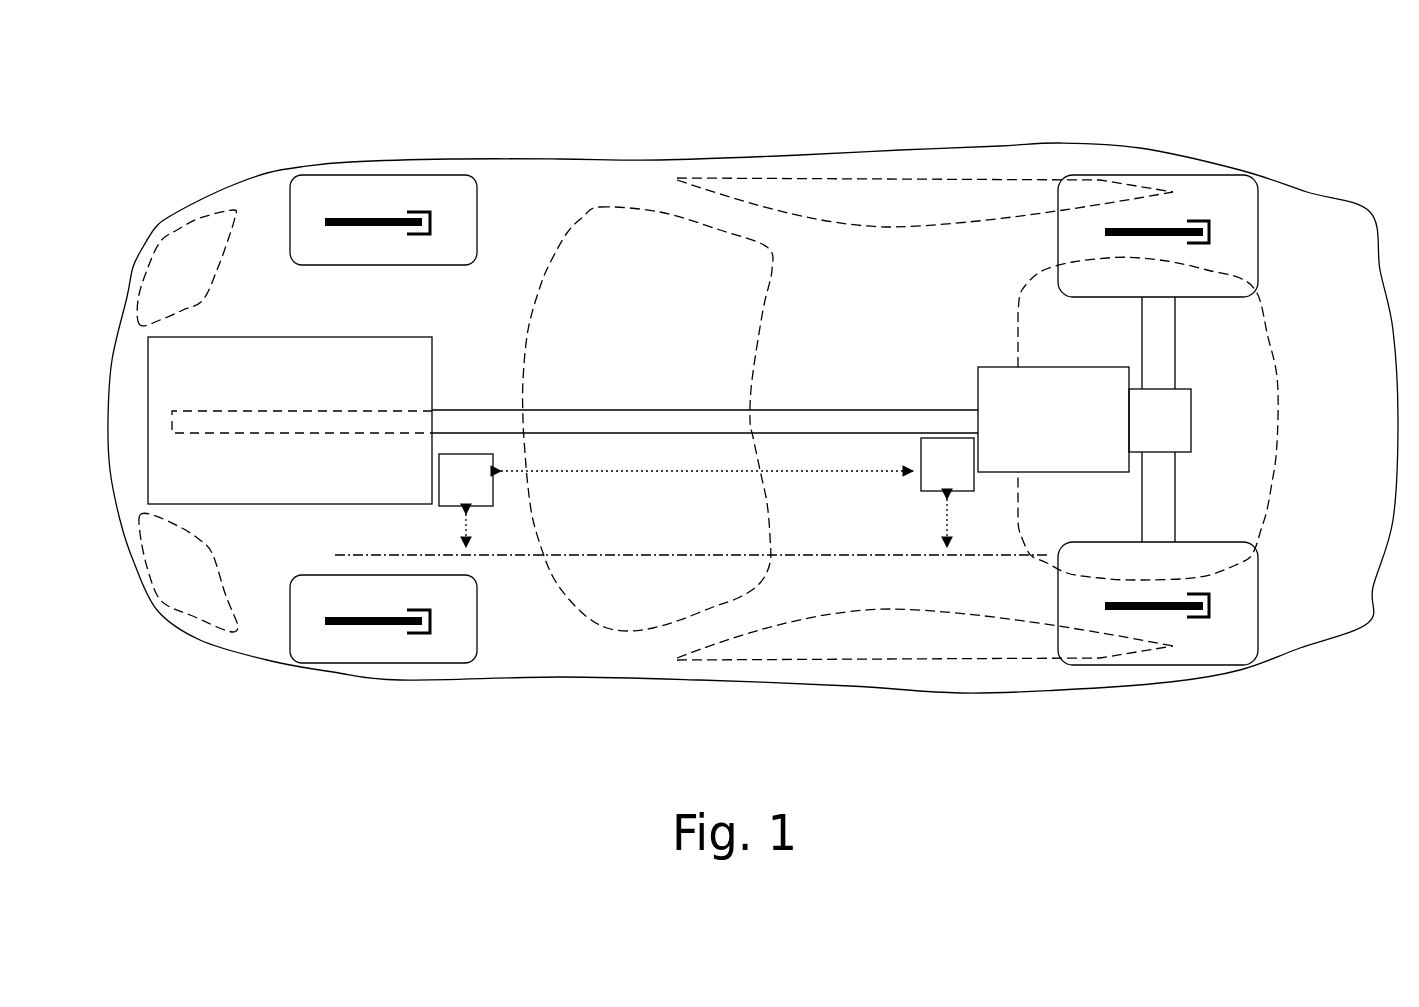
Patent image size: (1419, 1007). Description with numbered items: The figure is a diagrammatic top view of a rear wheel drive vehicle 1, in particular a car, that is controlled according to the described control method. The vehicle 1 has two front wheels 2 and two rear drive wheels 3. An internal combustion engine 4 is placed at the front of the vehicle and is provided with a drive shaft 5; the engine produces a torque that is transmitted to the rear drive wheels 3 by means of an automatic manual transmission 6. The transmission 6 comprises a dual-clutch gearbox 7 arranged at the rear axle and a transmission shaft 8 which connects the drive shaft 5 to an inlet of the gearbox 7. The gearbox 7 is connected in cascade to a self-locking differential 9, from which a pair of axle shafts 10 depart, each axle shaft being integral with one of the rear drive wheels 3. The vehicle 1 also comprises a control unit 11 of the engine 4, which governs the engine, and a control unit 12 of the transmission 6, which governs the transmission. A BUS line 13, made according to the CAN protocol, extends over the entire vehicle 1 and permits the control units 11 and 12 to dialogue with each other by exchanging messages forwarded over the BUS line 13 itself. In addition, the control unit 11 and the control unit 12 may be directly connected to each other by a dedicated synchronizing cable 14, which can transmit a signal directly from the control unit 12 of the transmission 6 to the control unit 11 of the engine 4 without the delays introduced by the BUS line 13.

The vehicle 1 is at (1272, 769).
The front wheels 2 is at (313, 193).
The rear drive wheels 3 is at (1240, 190).
The internal combustion engine 4 is at (157, 363).
The drive shaft 5 is at (275, 422).
The automatic manual transmission 6 is at (790, 148).
The dual-clutch gearbox 7 is at (1012, 400).
The transmission shaft 8 is at (812, 425).
The self-locking differential 9 is at (1160, 422).
The axle shafts 10 is at (1158, 358).
The control unit of the engine 11 is at (466, 500).
The control unit of the transmission 12 is at (947, 492).
The BUS line 13 is at (520, 584).
The synchronizing cable 14 is at (625, 474).